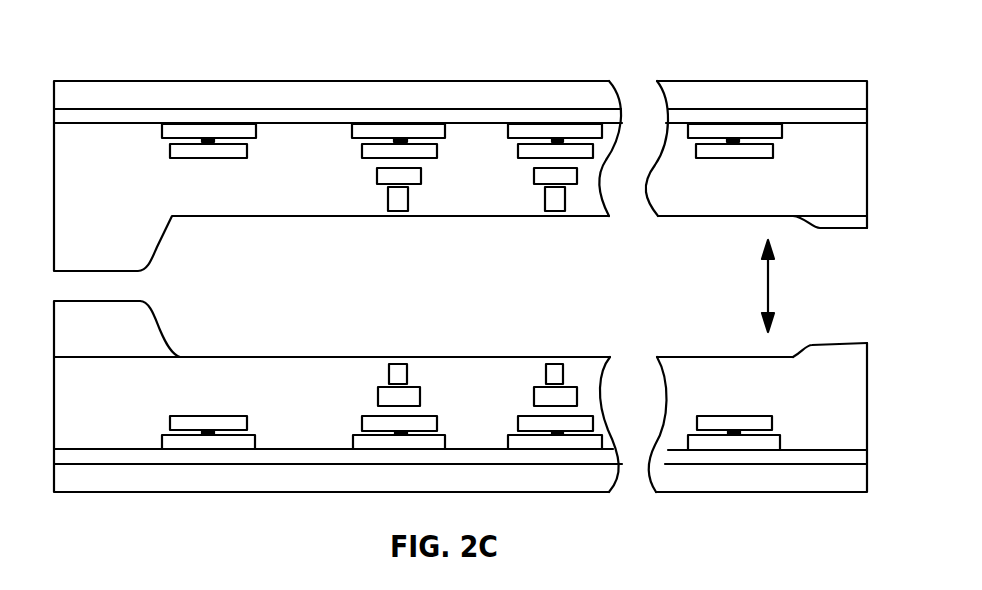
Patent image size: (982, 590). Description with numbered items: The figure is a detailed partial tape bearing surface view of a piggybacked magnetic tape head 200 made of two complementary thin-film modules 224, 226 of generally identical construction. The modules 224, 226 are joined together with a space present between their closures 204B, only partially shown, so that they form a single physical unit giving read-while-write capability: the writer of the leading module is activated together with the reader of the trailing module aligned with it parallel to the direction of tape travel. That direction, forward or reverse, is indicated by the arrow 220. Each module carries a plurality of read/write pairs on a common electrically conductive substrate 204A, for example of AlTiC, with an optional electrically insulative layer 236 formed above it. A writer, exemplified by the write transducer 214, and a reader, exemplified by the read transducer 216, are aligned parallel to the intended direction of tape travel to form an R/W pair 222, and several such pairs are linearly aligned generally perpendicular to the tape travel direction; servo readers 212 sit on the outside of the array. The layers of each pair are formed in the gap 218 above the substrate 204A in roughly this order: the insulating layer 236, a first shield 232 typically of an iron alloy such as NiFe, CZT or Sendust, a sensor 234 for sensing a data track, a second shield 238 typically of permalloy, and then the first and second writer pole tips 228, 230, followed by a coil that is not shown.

The magnetic tape head 200 is at (338, 150).
The substrate 204A is at (189, 106).
The closure 204B is at (157, 247).
The servo reader 212 is at (247, 413).
The write transducer 214 is at (391, 362).
The read transducer 216 is at (381, 416).
The gap 218 is at (255, 216).
The arrow 220 is at (770, 290).
The R/W pair 222 is at (435, 367).
The thin-film module 224 is at (792, 81).
The thin-film module 226 is at (460, 416).
The first writer pole tip 228 is at (378, 397).
The second writer pole tip 230 is at (388, 372).
The first shield 232 is at (353, 440).
The sensor 234 is at (362, 424).
The insulating layer 236 is at (858, 441).
The second shield 238 is at (362, 432).